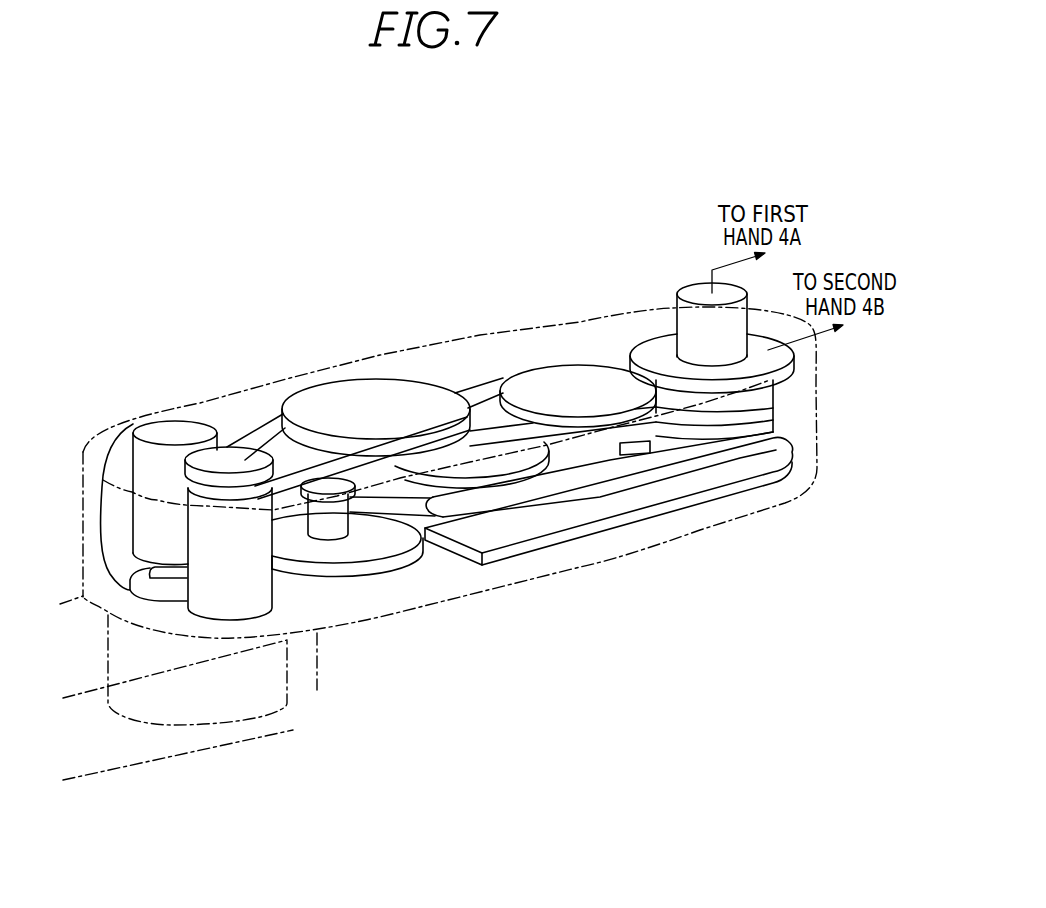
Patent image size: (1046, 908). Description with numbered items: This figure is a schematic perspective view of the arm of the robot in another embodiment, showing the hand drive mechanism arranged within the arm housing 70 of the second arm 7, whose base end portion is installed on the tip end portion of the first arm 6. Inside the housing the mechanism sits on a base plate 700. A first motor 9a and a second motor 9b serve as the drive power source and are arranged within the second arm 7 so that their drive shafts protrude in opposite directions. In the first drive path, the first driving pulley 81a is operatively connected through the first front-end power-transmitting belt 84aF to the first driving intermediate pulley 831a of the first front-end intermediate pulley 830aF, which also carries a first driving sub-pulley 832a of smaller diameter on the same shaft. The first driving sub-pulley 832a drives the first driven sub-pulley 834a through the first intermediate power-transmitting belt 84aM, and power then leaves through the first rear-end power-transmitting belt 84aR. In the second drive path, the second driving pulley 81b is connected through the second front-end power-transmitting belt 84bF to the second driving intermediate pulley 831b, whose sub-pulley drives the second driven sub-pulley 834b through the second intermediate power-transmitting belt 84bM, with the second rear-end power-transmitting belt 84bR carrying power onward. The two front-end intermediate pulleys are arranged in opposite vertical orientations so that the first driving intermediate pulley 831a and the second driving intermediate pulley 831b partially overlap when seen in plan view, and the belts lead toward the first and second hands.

The first arm 6 is at (109, 768).
The second arm 7 is at (569, 577).
The arm housing 70 is at (670, 547).
The base plate 700 is at (670, 500).
The first motor 9a is at (122, 439).
The second motor 9b is at (265, 598).
The first driving pulley 81a is at (100, 447).
The second driving pulley 81b is at (228, 450).
The first front-end power-transmitting belt 84aF is at (302, 590).
The second front-end power-transmitting belt 84bF is at (258, 432).
The first intermediate power-transmitting belt 84aM is at (477, 481).
The second intermediate power-transmitting belt 84bM is at (473, 388).
The first rear-end power-transmitting belt 84aR is at (707, 458).
The second rear-end power-transmitting belt 84bR is at (745, 420).
The first front-end intermediate pulley 830aF is at (506, 653).
The first driving intermediate pulley 831a is at (395, 545).
The second driving intermediate pulley 831b is at (368, 400).
The first driving sub-pulley 832a is at (348, 488).
The first driven sub-pulley 834a is at (545, 454).
The second driven sub-pulley 834b is at (567, 377).